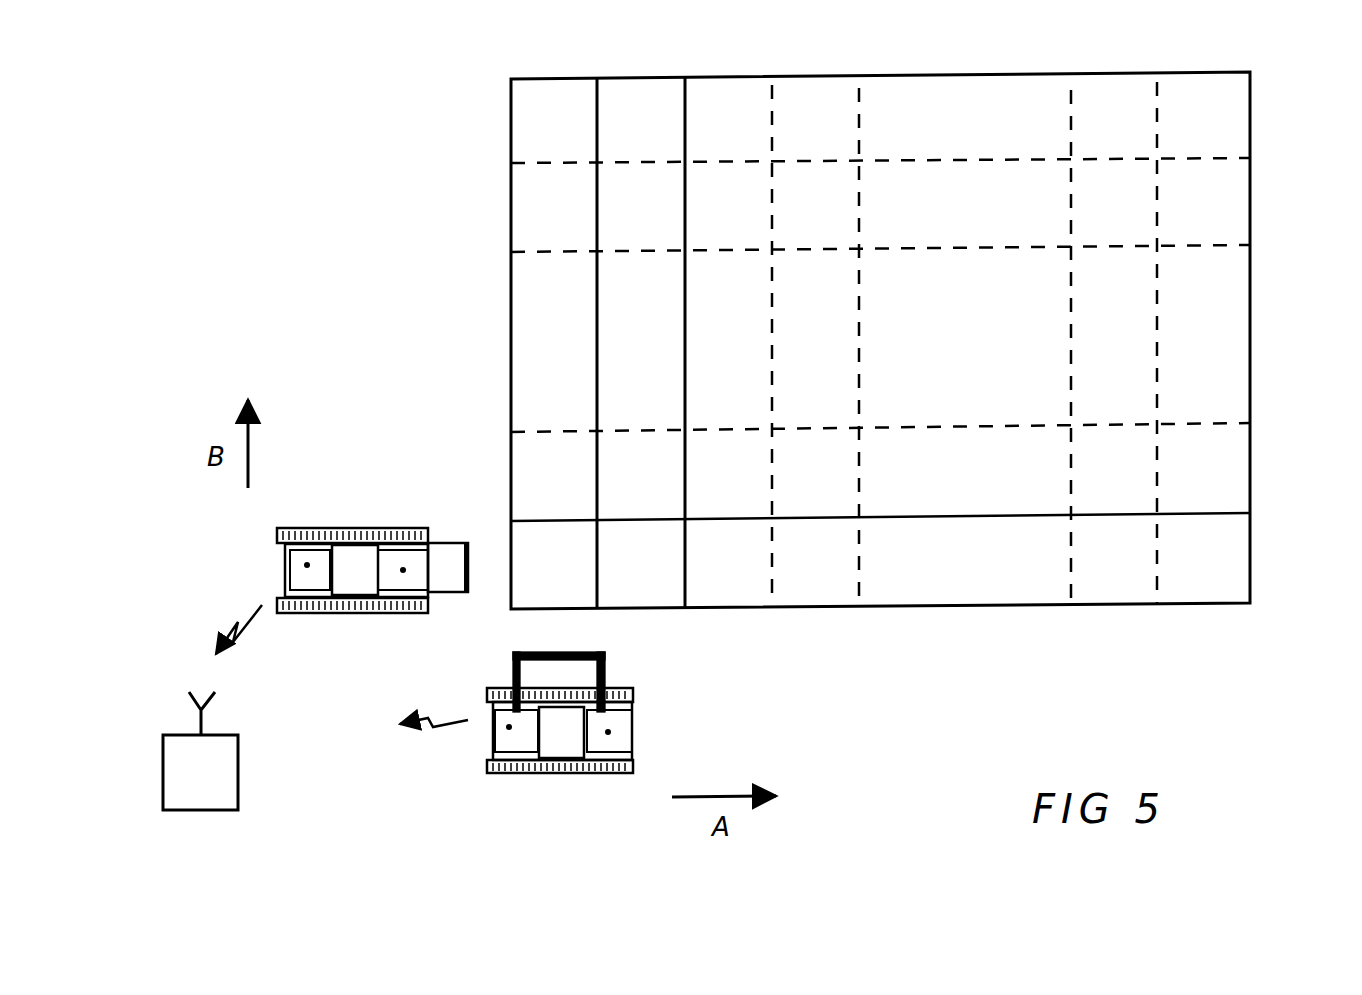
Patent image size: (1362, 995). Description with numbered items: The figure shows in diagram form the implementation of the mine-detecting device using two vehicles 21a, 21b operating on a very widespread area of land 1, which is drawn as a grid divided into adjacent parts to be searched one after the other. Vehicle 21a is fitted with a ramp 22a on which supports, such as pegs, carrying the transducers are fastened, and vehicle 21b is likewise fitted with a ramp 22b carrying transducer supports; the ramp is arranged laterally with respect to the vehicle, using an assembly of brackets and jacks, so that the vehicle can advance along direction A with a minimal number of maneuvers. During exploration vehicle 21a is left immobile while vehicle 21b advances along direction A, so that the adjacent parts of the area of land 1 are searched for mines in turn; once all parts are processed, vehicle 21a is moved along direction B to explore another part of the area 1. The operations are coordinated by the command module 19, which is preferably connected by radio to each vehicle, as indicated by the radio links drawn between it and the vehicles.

The area of land 1 is at (1193, 212).
The command module 19 is at (215, 780).
The vehicle 21a is at (327, 520).
The vehicle 21b is at (554, 793).
The ramp 22a is at (462, 543).
The gripping attachment of second vehicle 22b is at (588, 645).